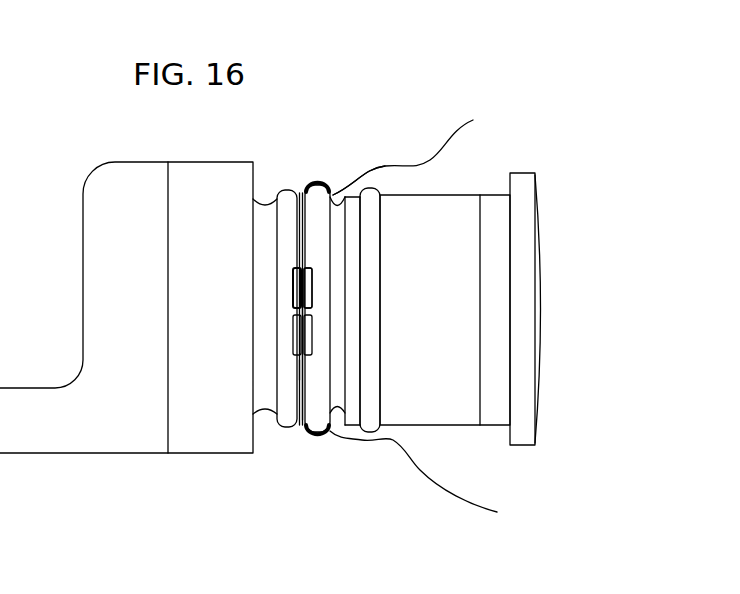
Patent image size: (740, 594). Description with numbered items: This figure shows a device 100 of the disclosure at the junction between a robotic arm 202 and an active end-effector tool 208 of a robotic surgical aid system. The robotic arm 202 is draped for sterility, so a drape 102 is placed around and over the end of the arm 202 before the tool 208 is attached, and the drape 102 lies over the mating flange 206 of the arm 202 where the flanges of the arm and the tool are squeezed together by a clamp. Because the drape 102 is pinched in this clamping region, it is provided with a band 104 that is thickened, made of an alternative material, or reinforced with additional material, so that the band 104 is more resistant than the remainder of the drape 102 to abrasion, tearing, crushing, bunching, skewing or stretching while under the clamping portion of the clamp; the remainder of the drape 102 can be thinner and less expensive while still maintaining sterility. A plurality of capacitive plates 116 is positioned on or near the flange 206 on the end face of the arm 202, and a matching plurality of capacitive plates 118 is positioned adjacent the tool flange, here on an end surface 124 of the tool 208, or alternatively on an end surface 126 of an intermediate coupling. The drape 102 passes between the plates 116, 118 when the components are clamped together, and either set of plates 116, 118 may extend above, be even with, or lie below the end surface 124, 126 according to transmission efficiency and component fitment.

The device 100 is at (400, 140).
The drape 102 is at (442, 138).
The band 104 is at (327, 183).
The capacitive plates 116 is at (313, 286).
The capacitive plates 118 is at (295, 265).
The end surface of tool 124 is at (296, 388).
The end surface of intermediate coupling 126 is at (296, 367).
The robotic arm 202 is at (459, 258).
The mating flange of arm 206 is at (318, 403).
The active end-effector tool 208 is at (146, 150).